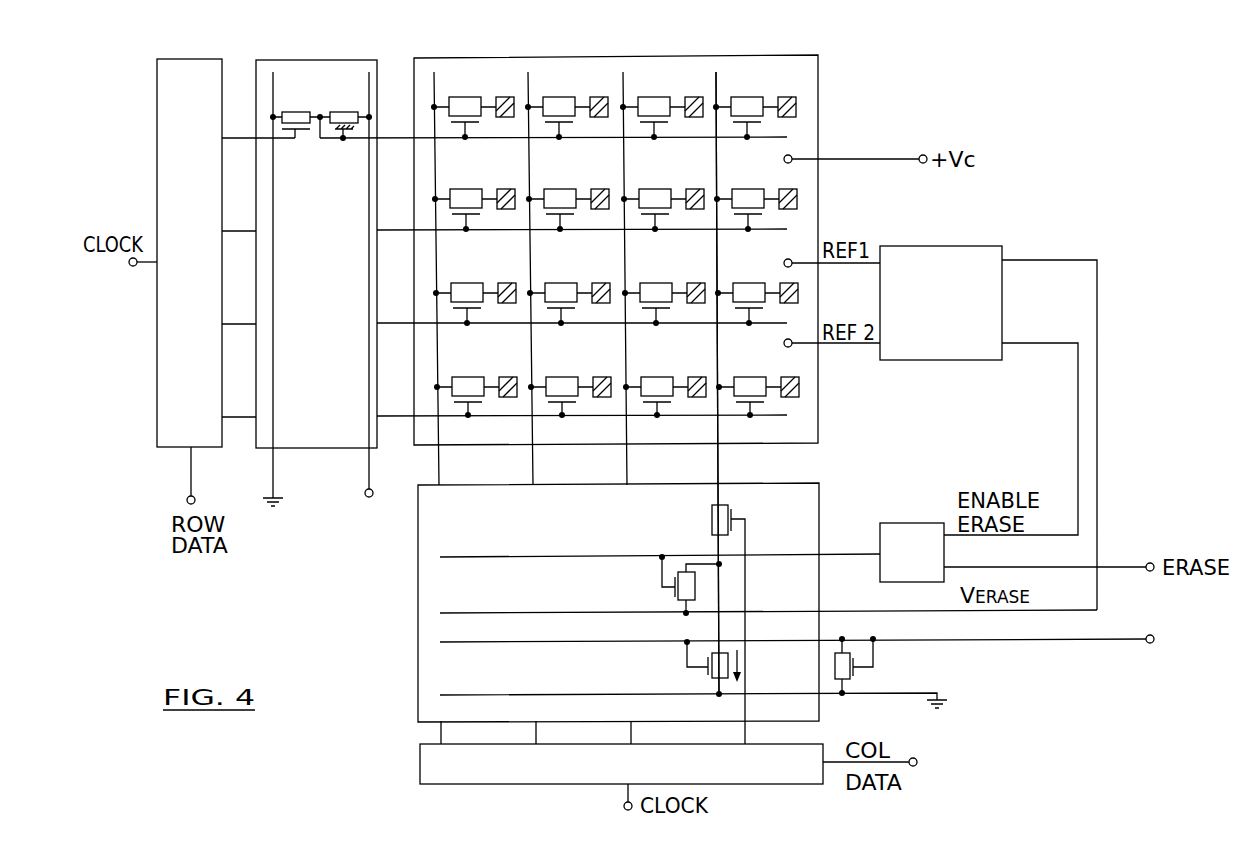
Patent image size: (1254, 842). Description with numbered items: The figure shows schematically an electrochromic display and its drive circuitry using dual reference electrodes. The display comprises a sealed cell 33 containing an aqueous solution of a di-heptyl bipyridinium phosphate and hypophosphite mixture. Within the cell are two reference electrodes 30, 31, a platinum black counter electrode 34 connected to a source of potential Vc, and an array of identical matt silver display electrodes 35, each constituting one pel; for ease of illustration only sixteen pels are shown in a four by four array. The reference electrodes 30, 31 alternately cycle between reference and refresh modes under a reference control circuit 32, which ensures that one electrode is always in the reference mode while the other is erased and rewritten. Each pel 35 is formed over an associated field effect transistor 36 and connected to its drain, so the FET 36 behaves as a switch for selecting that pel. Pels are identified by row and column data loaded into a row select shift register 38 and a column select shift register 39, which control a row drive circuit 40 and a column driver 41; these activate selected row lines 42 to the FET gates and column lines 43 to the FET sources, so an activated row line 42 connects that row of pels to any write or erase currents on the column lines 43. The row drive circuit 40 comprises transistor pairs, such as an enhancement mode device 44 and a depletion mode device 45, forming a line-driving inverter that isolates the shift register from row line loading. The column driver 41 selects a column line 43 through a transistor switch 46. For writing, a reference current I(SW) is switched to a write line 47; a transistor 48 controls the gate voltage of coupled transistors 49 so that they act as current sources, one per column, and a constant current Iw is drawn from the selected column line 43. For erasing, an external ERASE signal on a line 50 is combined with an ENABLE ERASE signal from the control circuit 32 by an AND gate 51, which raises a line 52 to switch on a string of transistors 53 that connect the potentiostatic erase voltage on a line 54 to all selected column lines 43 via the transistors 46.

The reference electrode 30 is at (784, 263).
The reference electrode 31 is at (784, 343).
The reference control circuit 32 is at (964, 246).
The sealed cell 33 is at (637, 371).
The counter electrode 34 is at (784, 160).
The display electrode 35 is at (519, 78).
The field effect transistor 36 is at (648, 97).
The row select shift register 38 is at (157, 90).
The column select shift register 39 is at (420, 762).
The row drive circuit 40 is at (308, 288).
The column driver 41 is at (797, 613).
The row line 42 is at (400, 137).
The column line 43 is at (719, 463).
The enhancement mode device 44 is at (303, 92).
The depletion mode device 45 is at (353, 92).
The transistor switch 46 is at (712, 521).
The write line 47 is at (1048, 640).
The transistor 48 is at (855, 668).
The coupled transistor 49 is at (708, 676).
The erase line 50 is at (1128, 567).
The AND gate 51 is at (930, 503).
The enable line 52 is at (864, 534).
The erase transistor 53 is at (678, 592).
The erase voltage line 54 is at (866, 592).